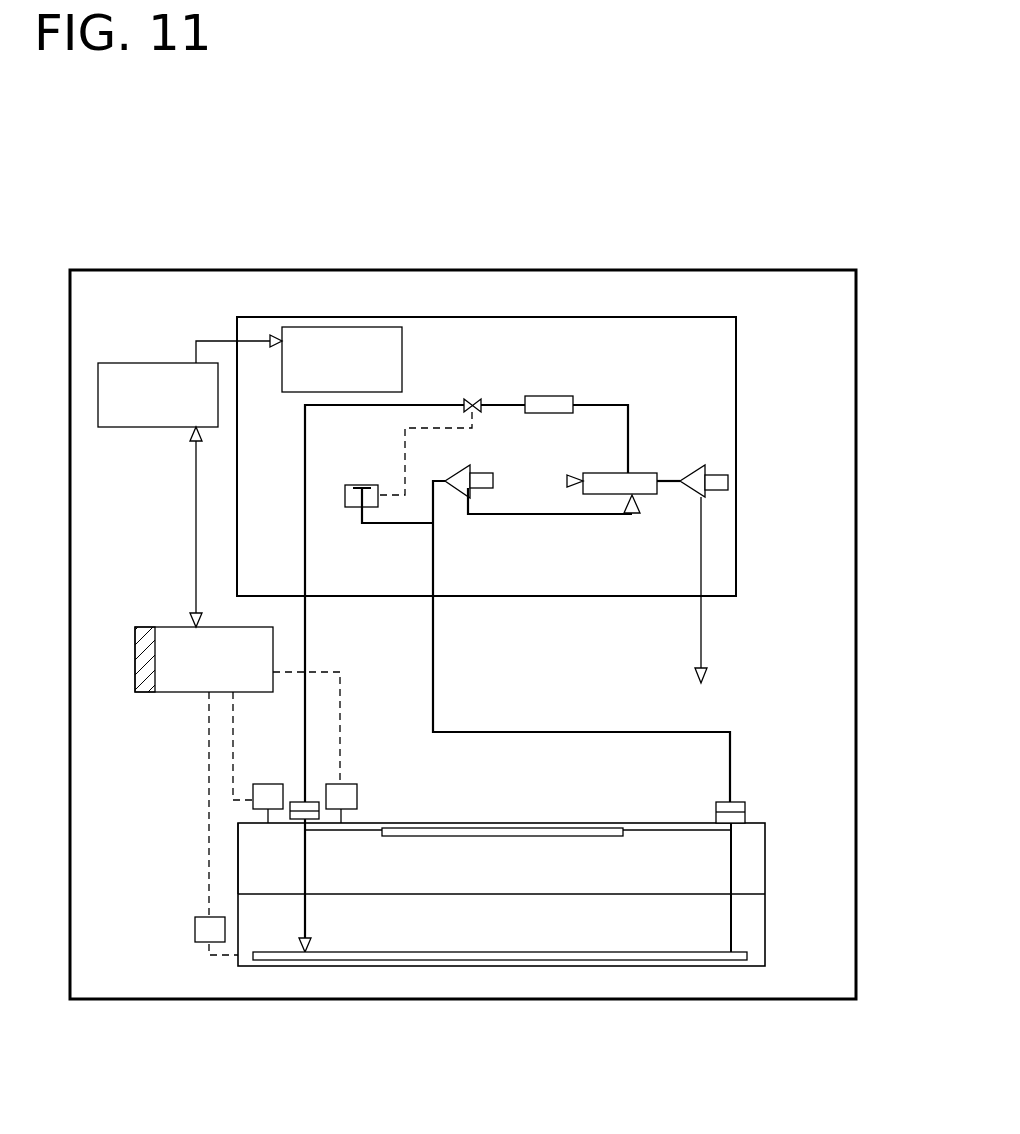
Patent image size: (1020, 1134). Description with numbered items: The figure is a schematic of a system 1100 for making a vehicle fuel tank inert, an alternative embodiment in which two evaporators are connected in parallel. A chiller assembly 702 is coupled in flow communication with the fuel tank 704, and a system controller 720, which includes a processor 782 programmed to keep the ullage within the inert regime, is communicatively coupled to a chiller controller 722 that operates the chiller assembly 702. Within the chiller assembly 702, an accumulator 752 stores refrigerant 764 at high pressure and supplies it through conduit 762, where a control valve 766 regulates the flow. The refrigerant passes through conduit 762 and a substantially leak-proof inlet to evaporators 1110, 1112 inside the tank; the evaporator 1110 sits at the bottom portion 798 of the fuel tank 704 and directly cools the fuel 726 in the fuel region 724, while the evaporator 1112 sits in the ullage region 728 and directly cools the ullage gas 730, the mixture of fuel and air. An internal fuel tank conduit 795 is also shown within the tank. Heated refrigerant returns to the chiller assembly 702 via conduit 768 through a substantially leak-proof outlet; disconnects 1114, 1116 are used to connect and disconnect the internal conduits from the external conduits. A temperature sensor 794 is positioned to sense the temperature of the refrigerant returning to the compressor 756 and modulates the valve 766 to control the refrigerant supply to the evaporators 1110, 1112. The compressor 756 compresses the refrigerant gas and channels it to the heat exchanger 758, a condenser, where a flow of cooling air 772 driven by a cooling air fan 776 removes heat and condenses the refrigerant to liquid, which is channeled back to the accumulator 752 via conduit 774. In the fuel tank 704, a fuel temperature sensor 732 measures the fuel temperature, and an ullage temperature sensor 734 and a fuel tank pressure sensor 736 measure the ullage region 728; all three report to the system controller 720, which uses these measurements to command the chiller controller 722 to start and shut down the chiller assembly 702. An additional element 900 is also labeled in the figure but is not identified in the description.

The system 1100 is at (808, 238).
The chiller assembly 702 is at (737, 343).
The chiller controller 722 is at (306, 326).
The user interface 900 is at (158, 362).
The system controller 720 is at (178, 626).
The processor 782 is at (144, 693).
The conduit 762 is at (306, 458).
The control valve 766 is at (470, 399).
The refrigerant 764 is at (541, 413).
The accumulator 752 is at (558, 395).
The conduit 774 is at (628, 410).
The heat exchanger 758 is at (616, 473).
The cooling air 772 is at (567, 481).
The compressor 756 is at (471, 476).
The cooling air fan 776 is at (728, 487).
The temperature sensor 794 is at (352, 507).
The conduit 768 is at (512, 732).
The vehicle fuel tank 704 is at (766, 890).
The fuel region 724 is at (226, 893).
The ullage region 728 is at (226, 846).
The ullage gas 730 is at (513, 878).
The fuel 726 is at (513, 933).
The evaporator 1112 is at (518, 828).
The evaporator 1110 is at (673, 962).
The internal fuel tank conduit 795 is at (731, 873).
The bottom portion 798 is at (780, 968).
The disconnect 1114 is at (313, 802).
The disconnect 1116 is at (716, 802).
The ullage temperature sensor 734 is at (253, 800).
The fuel tank pressure sensor 736 is at (350, 784).
The fuel temperature sensor 732 is at (195, 932).